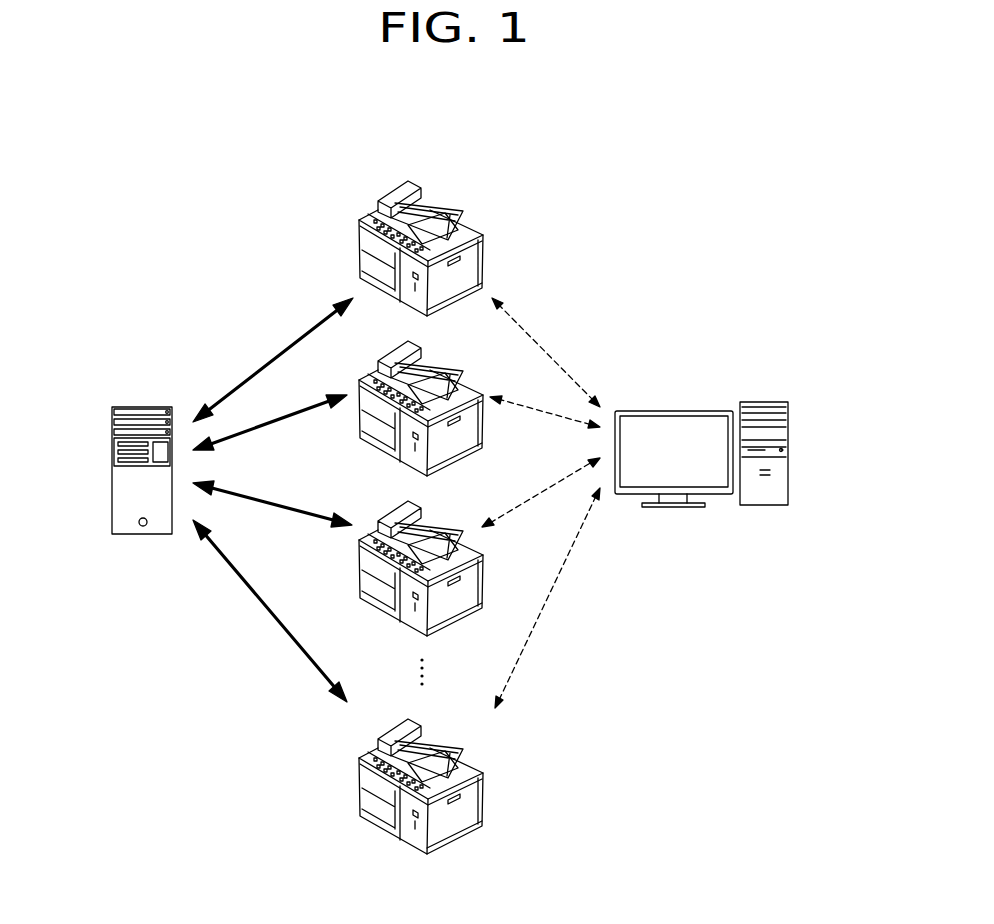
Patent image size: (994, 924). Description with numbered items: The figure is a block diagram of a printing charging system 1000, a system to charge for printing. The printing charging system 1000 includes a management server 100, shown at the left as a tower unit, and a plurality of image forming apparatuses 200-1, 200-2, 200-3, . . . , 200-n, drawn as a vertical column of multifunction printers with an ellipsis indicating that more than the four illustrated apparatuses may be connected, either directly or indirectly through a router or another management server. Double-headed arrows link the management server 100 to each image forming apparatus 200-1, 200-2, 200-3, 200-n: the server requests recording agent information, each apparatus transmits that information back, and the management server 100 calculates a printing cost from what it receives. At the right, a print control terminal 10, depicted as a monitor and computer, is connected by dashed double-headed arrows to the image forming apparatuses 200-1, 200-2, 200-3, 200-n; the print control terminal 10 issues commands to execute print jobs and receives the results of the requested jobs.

The printing charging system 1000 is at (474, 111).
The management server 100 is at (140, 406).
The image forming apparatus 200-1 is at (475, 225).
The image forming apparatus 200-2 is at (475, 387).
The image forming apparatus 200-3 is at (441, 522).
The image forming apparatus 200-n is at (432, 736).
The print control terminal 10 is at (685, 410).